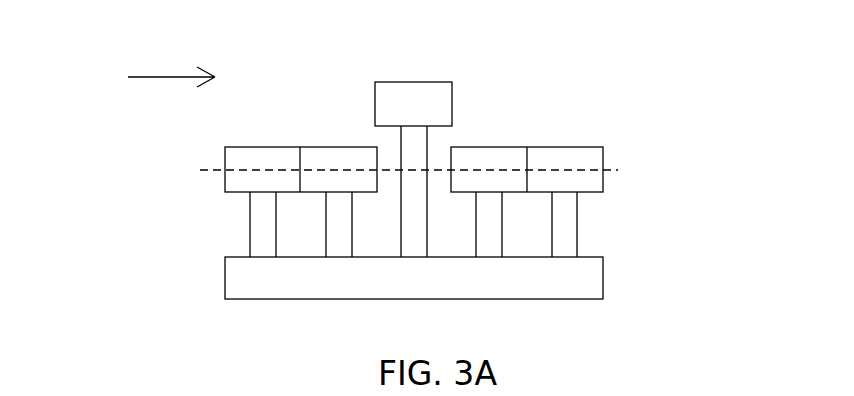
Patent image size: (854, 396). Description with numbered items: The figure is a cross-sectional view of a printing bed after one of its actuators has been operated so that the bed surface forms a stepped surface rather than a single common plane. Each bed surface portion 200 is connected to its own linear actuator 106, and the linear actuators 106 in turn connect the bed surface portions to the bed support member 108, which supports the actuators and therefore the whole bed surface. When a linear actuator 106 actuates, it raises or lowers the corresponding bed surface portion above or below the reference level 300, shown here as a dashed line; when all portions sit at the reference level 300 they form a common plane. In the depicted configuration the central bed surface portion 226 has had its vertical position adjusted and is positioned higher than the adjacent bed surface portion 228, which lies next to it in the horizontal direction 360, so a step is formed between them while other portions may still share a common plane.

The bed surface portion 200 is at (557, 93).
The central bed surface portion 226 is at (430, 102).
The adjacent bed surface portion 228 is at (333, 157).
The linear actuator 106 is at (565, 222).
The bed support member 108 is at (568, 287).
The reference level 300 is at (380, 174).
The horizontal direction 360 is at (158, 75).